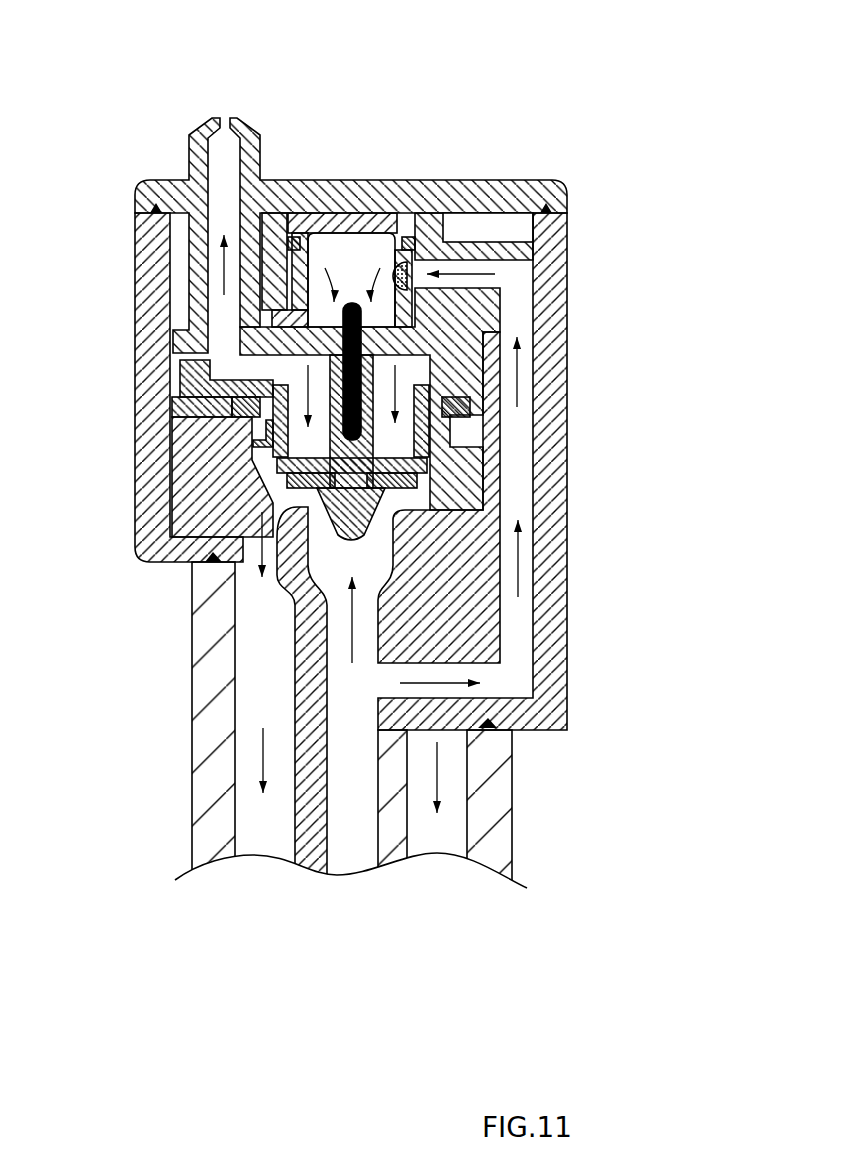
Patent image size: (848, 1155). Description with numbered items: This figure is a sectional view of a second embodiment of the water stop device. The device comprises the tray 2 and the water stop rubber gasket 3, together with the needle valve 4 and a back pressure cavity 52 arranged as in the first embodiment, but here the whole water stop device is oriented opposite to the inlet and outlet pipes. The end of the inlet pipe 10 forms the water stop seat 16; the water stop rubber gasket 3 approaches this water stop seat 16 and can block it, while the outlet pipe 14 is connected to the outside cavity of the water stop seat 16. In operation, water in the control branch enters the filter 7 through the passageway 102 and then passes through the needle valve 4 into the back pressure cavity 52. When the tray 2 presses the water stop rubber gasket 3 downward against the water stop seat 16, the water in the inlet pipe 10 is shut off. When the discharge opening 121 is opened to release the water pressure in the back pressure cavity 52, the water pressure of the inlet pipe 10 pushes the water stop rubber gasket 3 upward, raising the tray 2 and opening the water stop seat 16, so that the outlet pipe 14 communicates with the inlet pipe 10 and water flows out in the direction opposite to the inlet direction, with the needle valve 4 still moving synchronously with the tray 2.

The discharge opening 121 is at (223, 117).
The filter 7 is at (343, 223).
The needle valve 4 is at (353, 300).
The back pressure cavity 52 is at (415, 372).
The water stop seat 16 is at (400, 493).
The passageway 102 is at (512, 648).
The tray 2 is at (284, 412).
The water stop rubber gasket 3 is at (288, 485).
The outlet pipe 14 is at (450, 827).
The inlet pipe 10 is at (363, 828).